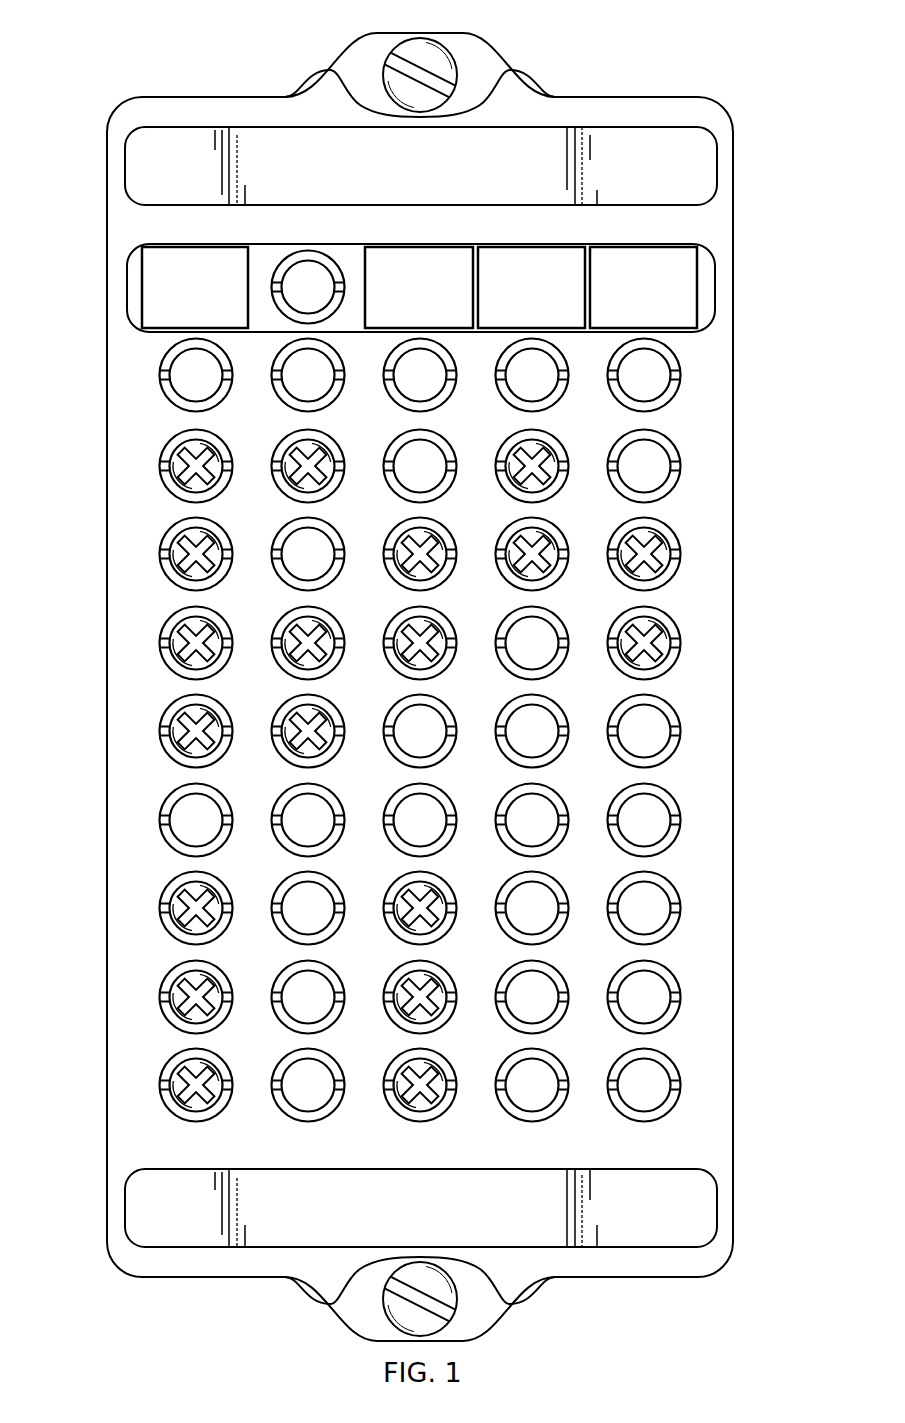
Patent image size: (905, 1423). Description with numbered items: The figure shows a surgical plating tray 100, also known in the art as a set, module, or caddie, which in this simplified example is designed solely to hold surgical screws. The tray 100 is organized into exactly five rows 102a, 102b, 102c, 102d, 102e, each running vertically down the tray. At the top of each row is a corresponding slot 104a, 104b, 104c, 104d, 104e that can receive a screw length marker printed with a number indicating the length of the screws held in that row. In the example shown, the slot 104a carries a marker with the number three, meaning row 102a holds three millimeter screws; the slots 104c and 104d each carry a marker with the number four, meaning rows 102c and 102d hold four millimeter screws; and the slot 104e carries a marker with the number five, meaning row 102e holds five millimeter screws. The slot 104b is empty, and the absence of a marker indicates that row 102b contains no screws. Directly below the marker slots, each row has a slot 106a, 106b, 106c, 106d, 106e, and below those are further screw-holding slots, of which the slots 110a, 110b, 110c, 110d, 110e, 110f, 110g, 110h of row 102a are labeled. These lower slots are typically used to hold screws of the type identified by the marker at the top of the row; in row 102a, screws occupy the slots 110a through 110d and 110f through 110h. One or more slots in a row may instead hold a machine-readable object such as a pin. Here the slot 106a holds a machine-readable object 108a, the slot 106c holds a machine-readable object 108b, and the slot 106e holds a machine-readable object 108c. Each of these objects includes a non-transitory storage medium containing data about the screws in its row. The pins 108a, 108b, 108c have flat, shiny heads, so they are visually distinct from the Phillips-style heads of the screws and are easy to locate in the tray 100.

The surgical plating tray 100 is at (402, 675).
The row 102a is at (180, 250).
The row 102b is at (285, 248).
The row 102c is at (406, 250).
The row 102d is at (518, 250).
The row 102e is at (630, 250).
The slot 104a is at (180, 270).
The slot 104b is at (285, 268).
The slot 104c is at (406, 270).
The slot 104d is at (518, 270).
The slot 104e is at (630, 270).
The slot 106a is at (174, 458).
The slot 106b is at (279, 458).
The slot 106c is at (393, 458).
The slot 106d is at (505, 458).
The slot 106e is at (617, 458).
The machine-readable object 108a is at (172, 384).
The machine-readable object 108b is at (396, 384).
The machine-readable object 108c is at (620, 384).
The slot 110a is at (359, 458).
The slot 110b is at (359, 554).
The slot 110c is at (359, 643).
The slot 110d is at (359, 731).
The slot 110e is at (359, 820).
The slot 110f is at (363, 908).
The slot 110g is at (359, 997).
The slot 110h is at (359, 1084).